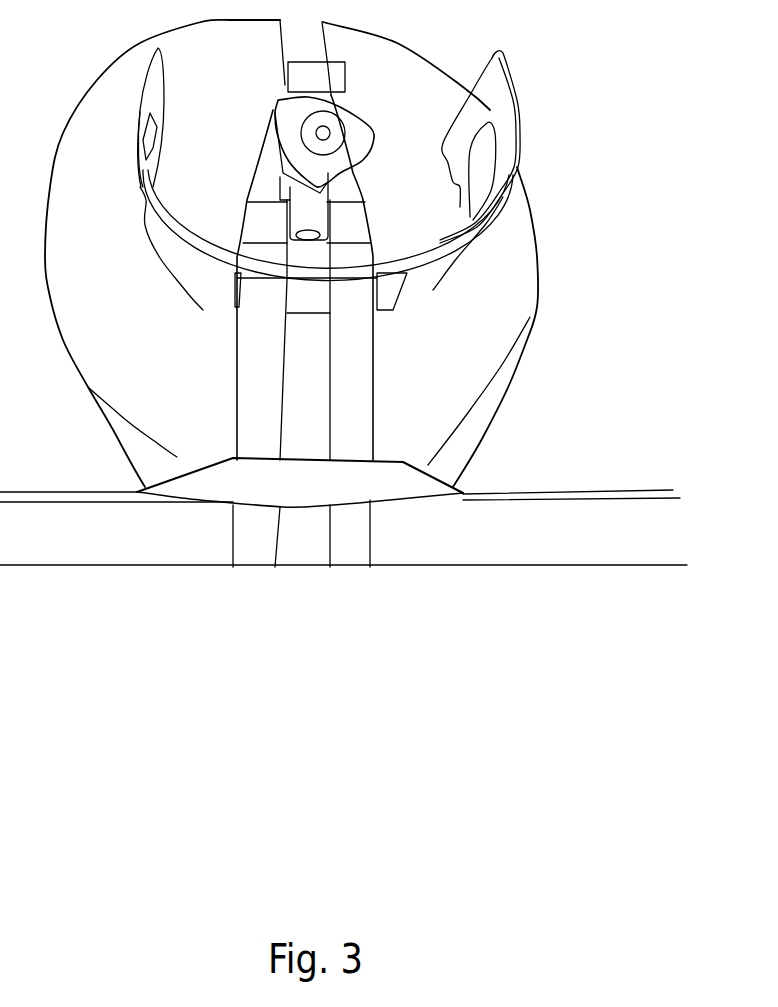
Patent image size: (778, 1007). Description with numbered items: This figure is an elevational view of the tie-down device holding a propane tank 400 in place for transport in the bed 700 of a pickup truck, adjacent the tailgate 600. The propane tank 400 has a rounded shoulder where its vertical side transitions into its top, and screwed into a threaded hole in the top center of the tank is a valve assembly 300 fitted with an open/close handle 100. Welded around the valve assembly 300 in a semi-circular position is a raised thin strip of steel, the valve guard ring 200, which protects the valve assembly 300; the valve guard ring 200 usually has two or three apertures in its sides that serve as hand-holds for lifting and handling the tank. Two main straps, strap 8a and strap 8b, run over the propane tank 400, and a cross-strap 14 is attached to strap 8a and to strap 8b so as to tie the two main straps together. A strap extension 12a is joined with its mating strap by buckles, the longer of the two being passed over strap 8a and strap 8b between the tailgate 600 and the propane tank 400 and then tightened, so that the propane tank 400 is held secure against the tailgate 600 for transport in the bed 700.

The propane tank 400 is at (500, 338).
The valve guard ring 200 is at (510, 120).
The valve assembly 300 is at (338, 89).
The open/close handle 100 is at (375, 123).
The cross-strap 14 is at (377, 227).
The main strap 8a is at (388, 412).
The main strap 8b is at (223, 412).
The strap extension 12a is at (430, 470).
The tailgate 600 is at (563, 543).
The bed 700 is at (617, 131).